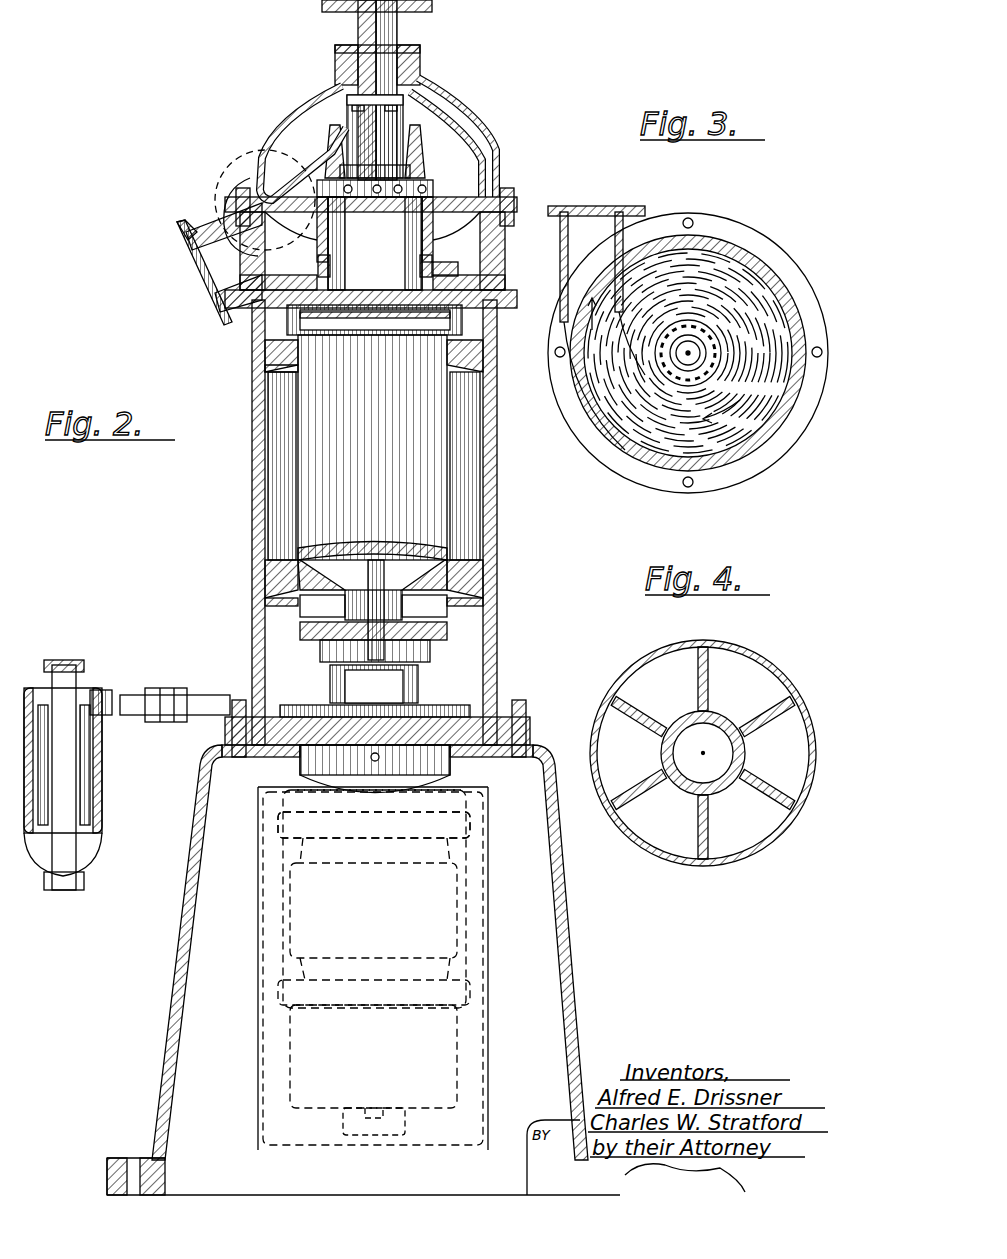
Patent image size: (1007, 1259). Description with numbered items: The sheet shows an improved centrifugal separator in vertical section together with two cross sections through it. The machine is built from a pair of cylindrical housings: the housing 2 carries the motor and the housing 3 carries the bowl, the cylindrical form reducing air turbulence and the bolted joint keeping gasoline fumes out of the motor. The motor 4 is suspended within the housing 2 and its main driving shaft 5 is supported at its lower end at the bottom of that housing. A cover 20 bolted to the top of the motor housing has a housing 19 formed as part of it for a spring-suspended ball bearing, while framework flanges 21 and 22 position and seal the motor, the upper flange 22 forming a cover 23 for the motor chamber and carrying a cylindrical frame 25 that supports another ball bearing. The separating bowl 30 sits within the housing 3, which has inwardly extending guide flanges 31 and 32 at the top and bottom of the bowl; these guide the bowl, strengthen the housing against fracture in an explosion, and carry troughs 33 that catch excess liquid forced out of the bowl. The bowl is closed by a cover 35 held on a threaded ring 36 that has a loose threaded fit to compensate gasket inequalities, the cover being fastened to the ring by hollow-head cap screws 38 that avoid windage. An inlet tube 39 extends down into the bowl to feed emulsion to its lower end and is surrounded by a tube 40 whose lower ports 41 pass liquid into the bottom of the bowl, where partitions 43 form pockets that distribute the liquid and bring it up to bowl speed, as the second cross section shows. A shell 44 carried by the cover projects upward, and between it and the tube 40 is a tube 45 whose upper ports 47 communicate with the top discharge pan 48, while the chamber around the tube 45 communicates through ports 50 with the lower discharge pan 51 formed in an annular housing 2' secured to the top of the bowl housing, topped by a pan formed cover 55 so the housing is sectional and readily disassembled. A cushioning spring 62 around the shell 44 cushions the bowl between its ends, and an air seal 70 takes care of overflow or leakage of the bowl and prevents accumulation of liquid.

In FIG. 2, the motor housing 2 is at (353, 970).
In FIG. 2, the annular housing 2' is at (378, 225).
In FIG. 2, the bowl housing 3 is at (258, 160).
In FIG. 2, the motor 4 is at (373, 870).
In FIG. 2, the main driving shaft 5 is at (375, 1112).
In FIG. 2, the bearing housing 19 is at (345, 685).
In FIG. 2, the cover 20 is at (430, 705).
In FIG. 2, the framework flange 21 is at (470, 1000).
In FIG. 2, the upper framework flange 22 is at (288, 825).
In FIG. 2, the motor chamber cover 23 is at (300, 792).
In FIG. 2, the cylindrical frame 25 is at (375, 769).
In FIG. 2, the separating bowl 30 is at (374, 447).
In FIG. 4, the separating bowl 30 is at (787, 825).
In FIG. 2, the upper guide flange 31 is at (262, 362).
In FIG. 2, the lower guide flange 32 is at (290, 600).
In FIG. 2, the trough 33 is at (290, 342).
In FIG. 2, the bowl cover 35 is at (215, 295).
In FIG. 2, the threaded ring 36 is at (287, 320).
In FIG. 2, the hollow-head cap screw 38 is at (378, 318).
In FIG. 2, the inlet tube 39 is at (376, 27).
In FIG. 3, the inlet tube 39 is at (672, 362).
In FIG. 2, the surrounding tube 40 is at (362, 92).
In FIG. 2, the port 41 is at (340, 614).
In FIG. 4, the port 41 is at (722, 718).
In FIG. 2, the partition 43 is at (300, 585).
In FIG. 4, the partition 43 is at (710, 815).
In FIG. 2, the shell 44 is at (375, 235).
In FIG. 2, the tube 45 is at (362, 125).
In FIG. 2, the port 47 is at (360, 105).
In FIG. 3, the port 47 is at (672, 380).
In FIG. 2, the top discharge pan 48 is at (432, 132).
In FIG. 3, the top discharge pan 48 is at (720, 272).
In FIG. 2, the port 50 is at (410, 175).
In FIG. 2, the lower discharge pan 51 is at (371, 260).
In FIG. 2, the pan formed cover 55 is at (295, 170).
In FIG. 3, the pan formed cover 55 is at (745, 450).
In FIG. 2, the cushioning spring 62 is at (458, 268).
In FIG. 2, the air seal 70 is at (102, 770).